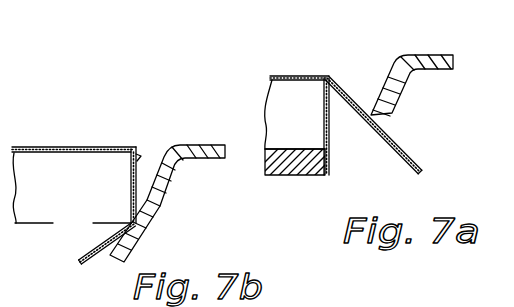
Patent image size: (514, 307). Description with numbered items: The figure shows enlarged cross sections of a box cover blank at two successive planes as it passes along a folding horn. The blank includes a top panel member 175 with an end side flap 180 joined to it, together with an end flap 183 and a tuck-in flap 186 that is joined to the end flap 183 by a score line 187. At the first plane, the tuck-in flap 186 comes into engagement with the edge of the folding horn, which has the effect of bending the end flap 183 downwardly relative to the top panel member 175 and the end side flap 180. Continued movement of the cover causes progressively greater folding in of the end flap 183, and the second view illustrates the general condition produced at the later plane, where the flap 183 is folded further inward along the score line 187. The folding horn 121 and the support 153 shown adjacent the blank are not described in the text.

In FIG. 7A, the tubular member 121 is at (463, 27).
In FIG. 7A, the base block 153 is at (278, 165).
In FIG. 7A, the top panel member 175 is at (291, 75).
In FIG. 7A, the end side flap 180 is at (325, 92).
In FIG. 7A, the end flap 183 is at (336, 82).
In FIG. 7B, the end flap 183 is at (131, 169).
In FIG. 7A, the tuck-in flap 186 is at (409, 157).
In FIG. 7B, the tuck-in flap 186 is at (110, 241).
In FIG. 7A, the score line 187 is at (382, 127).